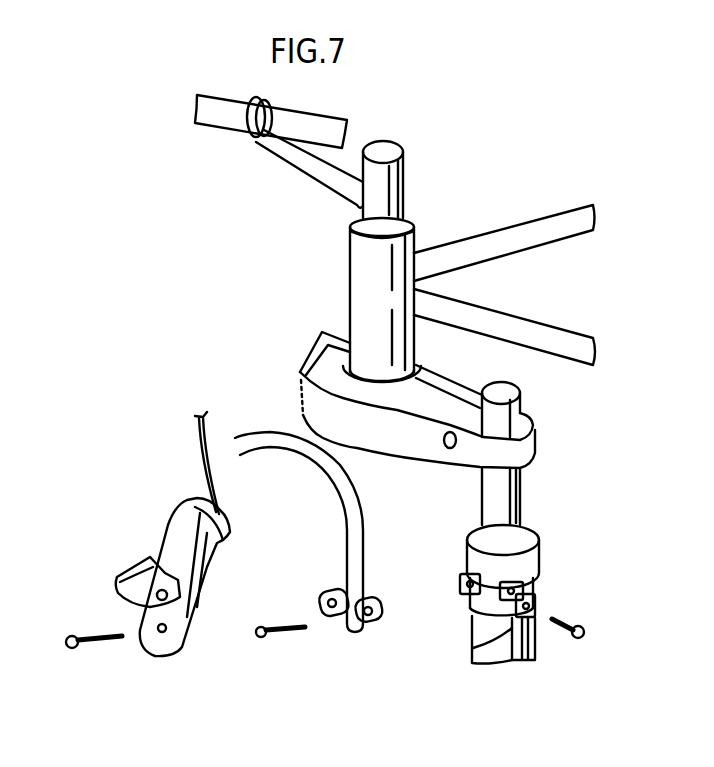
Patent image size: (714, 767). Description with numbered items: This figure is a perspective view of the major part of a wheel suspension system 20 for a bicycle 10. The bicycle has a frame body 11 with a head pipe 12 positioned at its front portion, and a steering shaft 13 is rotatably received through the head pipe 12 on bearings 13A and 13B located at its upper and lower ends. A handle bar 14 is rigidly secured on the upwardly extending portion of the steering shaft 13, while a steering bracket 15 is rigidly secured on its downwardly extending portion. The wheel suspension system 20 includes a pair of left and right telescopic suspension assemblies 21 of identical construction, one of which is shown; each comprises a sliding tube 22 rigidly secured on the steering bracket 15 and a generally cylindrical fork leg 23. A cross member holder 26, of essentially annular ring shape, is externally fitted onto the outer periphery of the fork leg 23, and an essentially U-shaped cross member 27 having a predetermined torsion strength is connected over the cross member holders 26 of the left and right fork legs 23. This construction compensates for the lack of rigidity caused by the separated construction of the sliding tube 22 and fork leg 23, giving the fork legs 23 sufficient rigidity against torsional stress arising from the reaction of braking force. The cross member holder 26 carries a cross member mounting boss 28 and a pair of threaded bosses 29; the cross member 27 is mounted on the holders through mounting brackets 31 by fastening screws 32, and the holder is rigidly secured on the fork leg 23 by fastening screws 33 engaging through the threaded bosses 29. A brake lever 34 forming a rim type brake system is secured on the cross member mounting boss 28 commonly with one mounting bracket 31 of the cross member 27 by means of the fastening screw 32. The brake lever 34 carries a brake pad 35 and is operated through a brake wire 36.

The bicycle 10 is at (487, 182).
The frame body 11 is at (543, 238).
The head pipe 12 is at (363, 270).
The steering shaft 13 is at (405, 182).
The upper bearing 13A is at (410, 217).
The lower bearing 13B is at (413, 370).
The handle bar 14 is at (218, 124).
The steering bracket 15 is at (417, 435).
The wheel suspension system 20 is at (550, 523).
The telescopic suspension assembly 21 is at (531, 483).
The sliding tube 22 is at (487, 490).
The fork leg 23 is at (477, 627).
The cross member holder 26 is at (480, 597).
The cross member 27 is at (291, 455).
The cross member mounting boss 28 is at (462, 573).
The threaded boss 29 is at (473, 648).
The mounting bracket 31 is at (320, 590).
The fastening screw 32 is at (87, 635).
The fastening screw 33 is at (563, 618).
The brake lever 34 is at (177, 538).
The brake pad 35 is at (120, 573).
The brake wire 36 is at (197, 440).